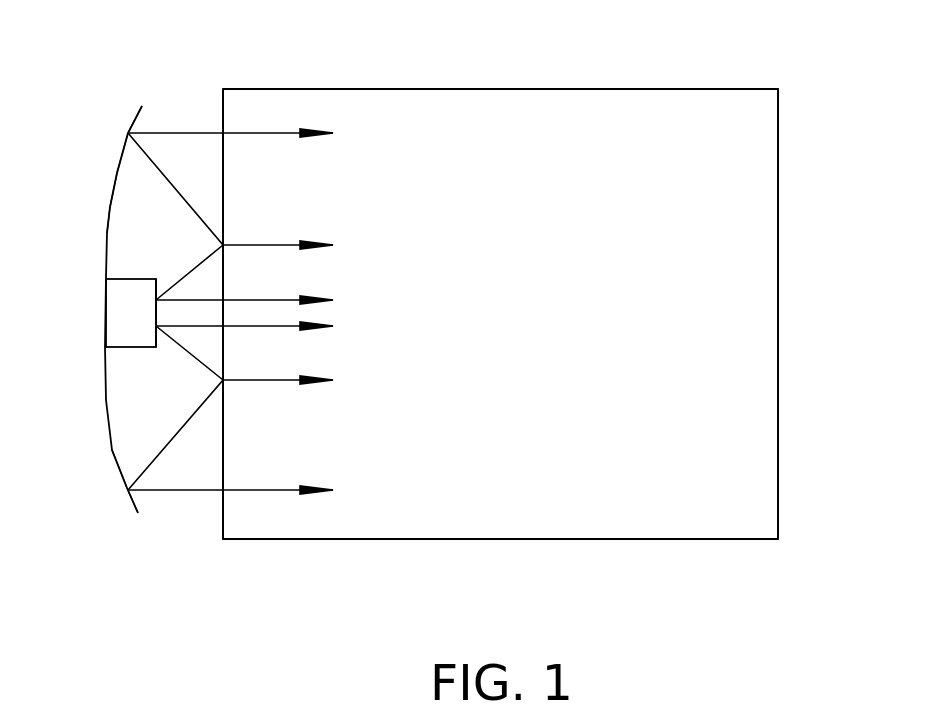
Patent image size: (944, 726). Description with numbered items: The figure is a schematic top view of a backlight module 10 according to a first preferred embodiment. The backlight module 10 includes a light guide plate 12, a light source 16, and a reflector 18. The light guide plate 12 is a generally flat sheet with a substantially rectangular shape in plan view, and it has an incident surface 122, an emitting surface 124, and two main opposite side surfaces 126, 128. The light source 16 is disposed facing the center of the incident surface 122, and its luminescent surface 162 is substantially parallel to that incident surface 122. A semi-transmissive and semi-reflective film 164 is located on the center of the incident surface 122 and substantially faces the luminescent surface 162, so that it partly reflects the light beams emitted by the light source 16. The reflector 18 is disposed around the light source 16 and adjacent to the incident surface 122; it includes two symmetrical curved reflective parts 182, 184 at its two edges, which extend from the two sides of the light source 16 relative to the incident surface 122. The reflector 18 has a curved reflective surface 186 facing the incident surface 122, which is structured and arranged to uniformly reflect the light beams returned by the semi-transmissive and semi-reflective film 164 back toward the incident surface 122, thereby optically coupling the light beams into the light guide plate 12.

The backlight module 10 is at (408, 50).
The light guide plate 12 is at (590, 82).
The incident surface 122 is at (222, 104).
The emitting surface 124 is at (740, 244).
The main opposite side surface 126 is at (553, 543).
The main opposite side surface 128 is at (703, 88).
The light source 16 is at (122, 322).
The luminescent surface 162 is at (166, 347).
The semi-transmissive and semi-reflective film 164 is at (220, 425).
The reflector 18 is at (103, 233).
The curved reflective part 182 is at (126, 151).
The curved reflective part 184 is at (140, 512).
The curved reflective surface 186 is at (116, 191).